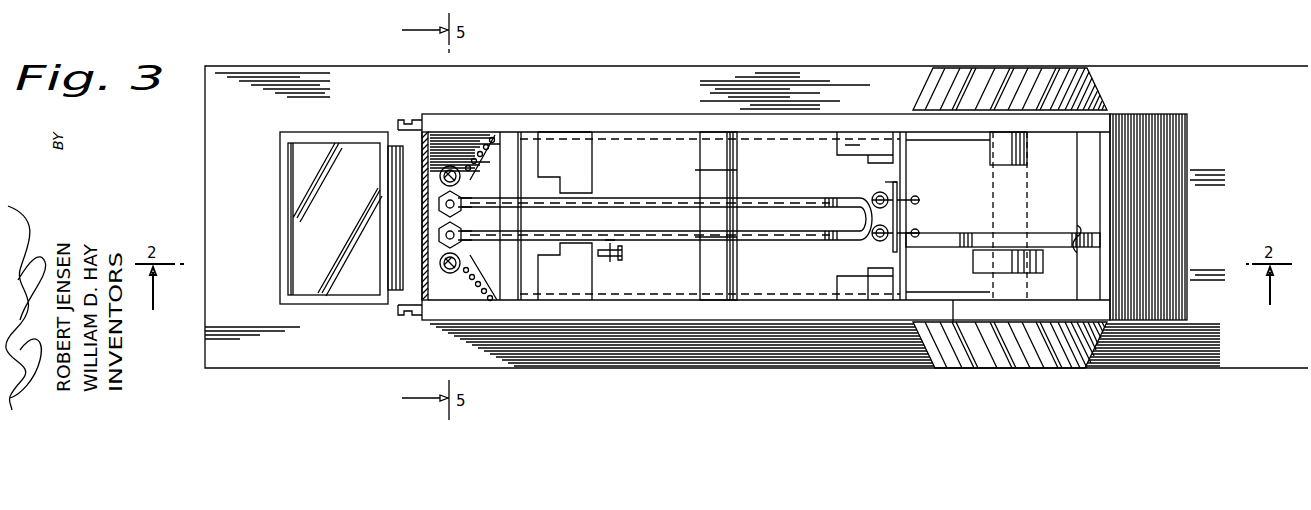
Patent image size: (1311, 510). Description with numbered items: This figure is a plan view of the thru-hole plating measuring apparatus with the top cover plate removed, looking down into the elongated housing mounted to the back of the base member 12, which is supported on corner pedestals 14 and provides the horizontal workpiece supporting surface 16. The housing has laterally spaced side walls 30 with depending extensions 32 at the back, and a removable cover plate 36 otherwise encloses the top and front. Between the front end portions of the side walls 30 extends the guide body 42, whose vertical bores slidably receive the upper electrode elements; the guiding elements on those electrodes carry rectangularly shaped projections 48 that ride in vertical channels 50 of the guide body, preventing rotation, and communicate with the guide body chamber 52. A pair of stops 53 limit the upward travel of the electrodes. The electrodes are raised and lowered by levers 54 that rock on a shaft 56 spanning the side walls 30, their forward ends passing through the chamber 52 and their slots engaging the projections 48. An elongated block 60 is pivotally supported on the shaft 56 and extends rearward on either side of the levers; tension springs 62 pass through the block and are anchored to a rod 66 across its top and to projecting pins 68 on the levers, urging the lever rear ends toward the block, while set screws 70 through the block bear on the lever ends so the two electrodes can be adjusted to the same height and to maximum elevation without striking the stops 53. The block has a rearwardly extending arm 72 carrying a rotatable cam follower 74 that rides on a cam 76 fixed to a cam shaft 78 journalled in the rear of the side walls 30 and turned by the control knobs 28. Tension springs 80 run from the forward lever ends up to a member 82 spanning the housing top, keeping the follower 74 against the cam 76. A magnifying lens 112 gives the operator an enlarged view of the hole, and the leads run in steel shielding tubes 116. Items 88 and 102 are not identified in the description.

The base member 12 is at (278, 370).
The corner pedestals 14 is at (205, 0).
The workpiece supporting surface 16 is at (230, 318).
The control knobs 28 is at (1030, 77).
The side walls 30 is at (668, 118).
The depending extensions 32 is at (1150, 192).
The cover plate 36 is at (423, 162).
The guide body 42 is at (462, 132).
The rectangularly shaped projections 48 is at (517, 132).
The vertical channels 50 is at (447, 217).
The guide body chamber 52 is at (556, 132).
The stops 53 is at (435, 178).
The levers 54 is at (648, 198).
The shaft 56 is at (718, 148).
The elongated block 60 is at (773, 253).
The tension springs 62 is at (897, 188).
The rod 66 is at (887, 182).
The projecting pins 68 is at (915, 197).
The set screws 70 is at (878, 193).
The arm 72 is at (953, 322).
The cam follower 74 is at (1003, 235).
The cam 76 is at (1040, 238).
The cam shaft 78 is at (1030, 157).
The tension springs 80 is at (612, 262).
The member 82 is at (596, 134).
The member 88 is at (392, 6).
The member 102 is at (320, 4).
The magnifying lens 112 is at (300, 189).
The steel shielding tubes 116 is at (648, 137).